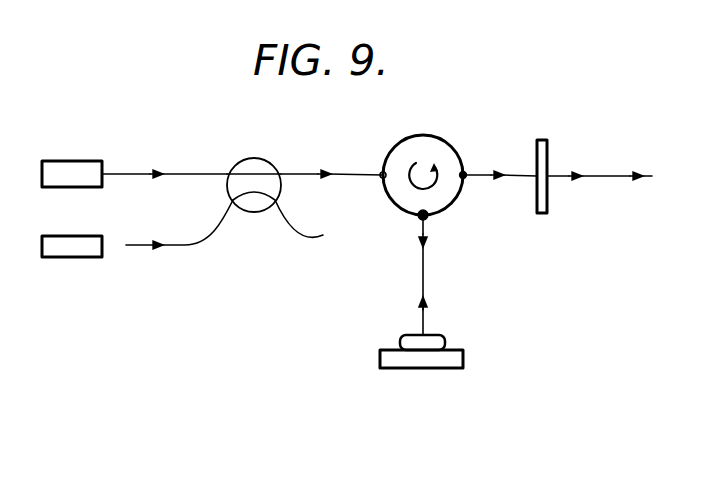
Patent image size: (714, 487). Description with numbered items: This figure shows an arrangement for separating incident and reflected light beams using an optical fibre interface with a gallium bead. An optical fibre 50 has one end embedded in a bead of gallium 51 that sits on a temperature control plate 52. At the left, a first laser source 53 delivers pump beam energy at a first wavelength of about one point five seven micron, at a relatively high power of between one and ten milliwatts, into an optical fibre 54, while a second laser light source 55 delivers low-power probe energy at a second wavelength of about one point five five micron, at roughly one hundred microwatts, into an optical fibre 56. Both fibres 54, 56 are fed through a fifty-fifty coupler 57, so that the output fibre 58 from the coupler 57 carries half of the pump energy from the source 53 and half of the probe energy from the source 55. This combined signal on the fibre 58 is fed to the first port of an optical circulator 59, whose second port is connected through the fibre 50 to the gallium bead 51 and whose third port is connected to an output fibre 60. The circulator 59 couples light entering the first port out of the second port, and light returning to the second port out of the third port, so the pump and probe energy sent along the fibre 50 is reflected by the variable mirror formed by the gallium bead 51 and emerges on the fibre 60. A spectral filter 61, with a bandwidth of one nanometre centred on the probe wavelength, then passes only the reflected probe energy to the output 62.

The optical fibre 50 is at (425, 262).
The bead of gallium 51 is at (402, 335).
The temperature control plate 52 is at (380, 355).
The first laser source 53 is at (68, 164).
The optical fibre 54 is at (133, 172).
The second laser light source 55 is at (68, 257).
The optical fibre 56 is at (182, 246).
The 50/50 coupler 57 is at (247, 158).
The output fibre 58 is at (313, 170).
The optical circulator 59 is at (403, 140).
The output fibre 60 is at (487, 170).
The spectral filter 61 is at (548, 147).
The output 62 is at (637, 172).